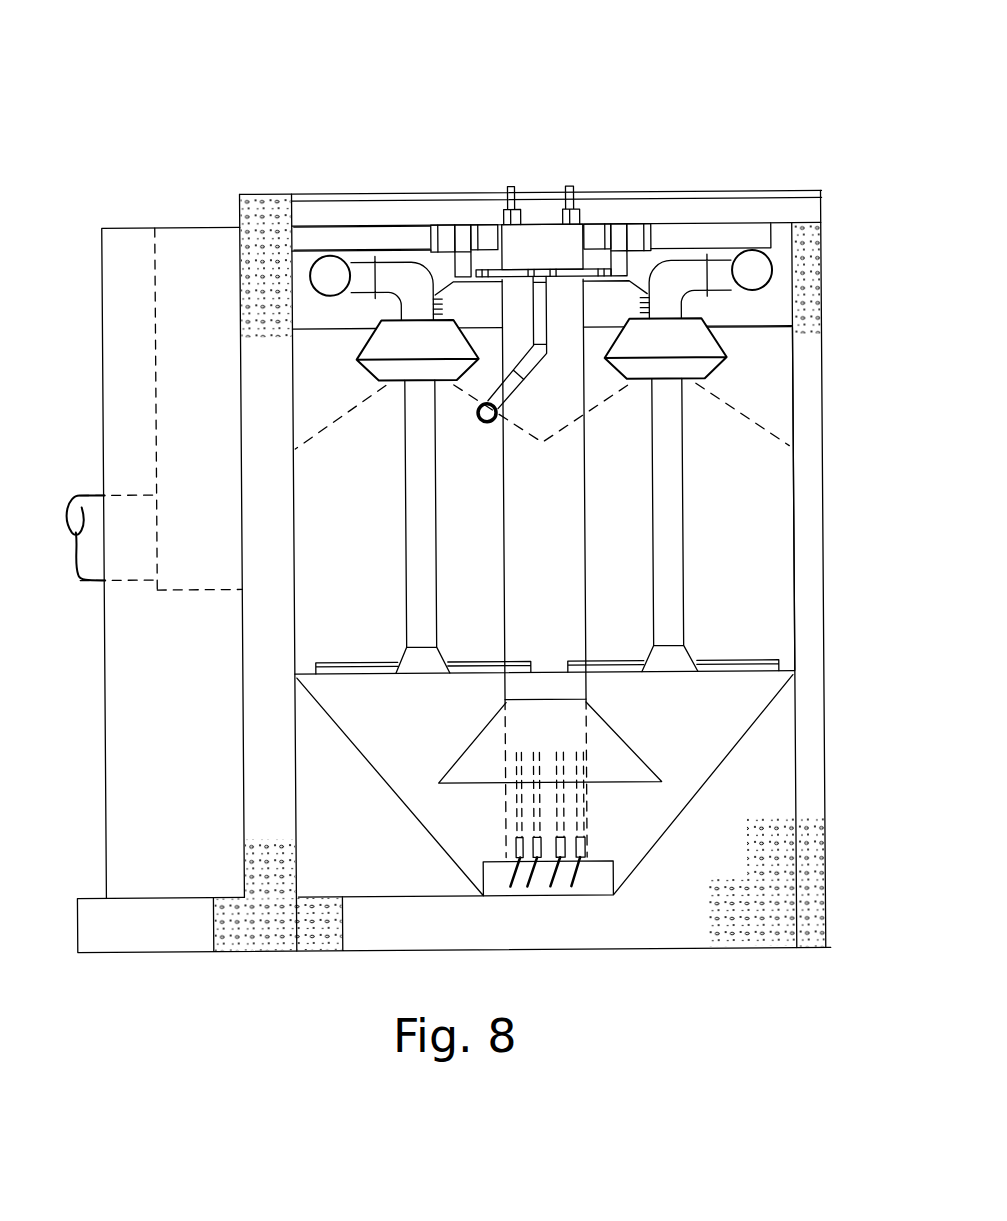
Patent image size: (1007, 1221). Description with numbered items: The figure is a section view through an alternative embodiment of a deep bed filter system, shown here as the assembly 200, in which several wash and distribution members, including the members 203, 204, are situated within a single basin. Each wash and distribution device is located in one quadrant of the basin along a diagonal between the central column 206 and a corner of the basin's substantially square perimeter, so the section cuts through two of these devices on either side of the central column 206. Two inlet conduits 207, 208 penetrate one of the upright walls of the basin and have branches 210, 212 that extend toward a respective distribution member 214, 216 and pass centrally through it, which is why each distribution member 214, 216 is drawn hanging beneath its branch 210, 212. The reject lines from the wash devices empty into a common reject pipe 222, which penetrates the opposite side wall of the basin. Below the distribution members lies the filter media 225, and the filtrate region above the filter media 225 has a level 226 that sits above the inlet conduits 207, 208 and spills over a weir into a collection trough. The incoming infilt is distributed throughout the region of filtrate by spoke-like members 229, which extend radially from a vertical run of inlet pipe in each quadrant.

The processing apparatus 200 is at (225, 66).
The wash and distribution member 203 is at (448, 235).
The wash and distribution member 204 is at (635, 235).
The central column 206 is at (483, 660).
The inlet conduit 207 is at (318, 273).
The inlet conduit 208 is at (722, 253).
The branch 210 is at (353, 263).
The branch 212 is at (678, 262).
The distribution member 214 is at (358, 350).
The distribution member 216 is at (720, 338).
The common reject pipe 222 is at (770, 368).
The filter media 225 is at (772, 472).
The level 226 is at (400, 247).
The spoke-like members 229 is at (743, 655).